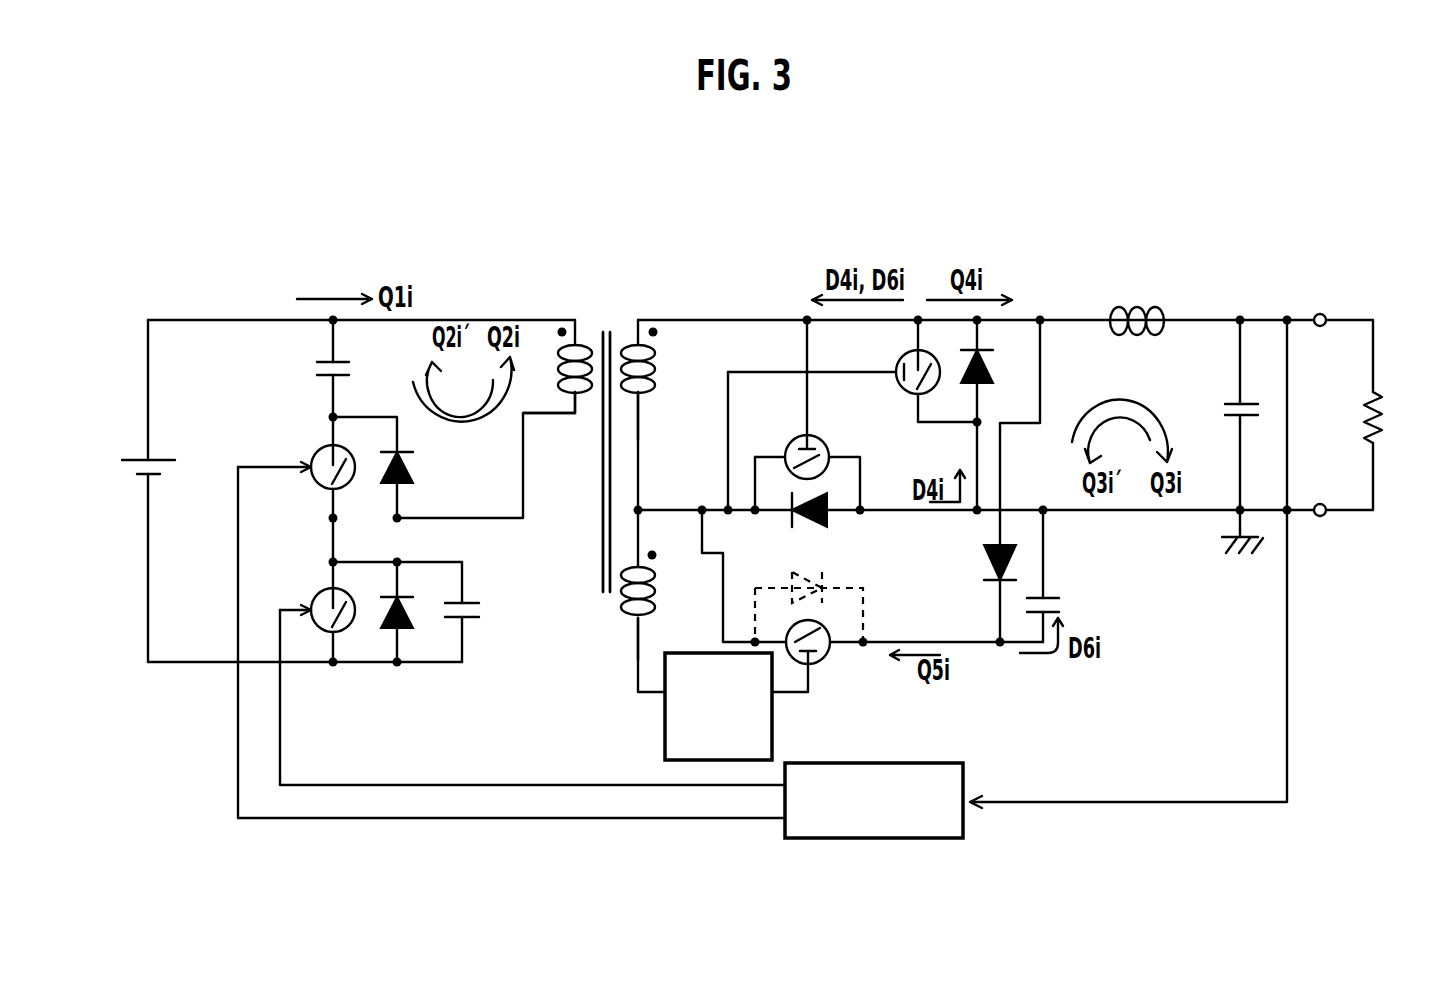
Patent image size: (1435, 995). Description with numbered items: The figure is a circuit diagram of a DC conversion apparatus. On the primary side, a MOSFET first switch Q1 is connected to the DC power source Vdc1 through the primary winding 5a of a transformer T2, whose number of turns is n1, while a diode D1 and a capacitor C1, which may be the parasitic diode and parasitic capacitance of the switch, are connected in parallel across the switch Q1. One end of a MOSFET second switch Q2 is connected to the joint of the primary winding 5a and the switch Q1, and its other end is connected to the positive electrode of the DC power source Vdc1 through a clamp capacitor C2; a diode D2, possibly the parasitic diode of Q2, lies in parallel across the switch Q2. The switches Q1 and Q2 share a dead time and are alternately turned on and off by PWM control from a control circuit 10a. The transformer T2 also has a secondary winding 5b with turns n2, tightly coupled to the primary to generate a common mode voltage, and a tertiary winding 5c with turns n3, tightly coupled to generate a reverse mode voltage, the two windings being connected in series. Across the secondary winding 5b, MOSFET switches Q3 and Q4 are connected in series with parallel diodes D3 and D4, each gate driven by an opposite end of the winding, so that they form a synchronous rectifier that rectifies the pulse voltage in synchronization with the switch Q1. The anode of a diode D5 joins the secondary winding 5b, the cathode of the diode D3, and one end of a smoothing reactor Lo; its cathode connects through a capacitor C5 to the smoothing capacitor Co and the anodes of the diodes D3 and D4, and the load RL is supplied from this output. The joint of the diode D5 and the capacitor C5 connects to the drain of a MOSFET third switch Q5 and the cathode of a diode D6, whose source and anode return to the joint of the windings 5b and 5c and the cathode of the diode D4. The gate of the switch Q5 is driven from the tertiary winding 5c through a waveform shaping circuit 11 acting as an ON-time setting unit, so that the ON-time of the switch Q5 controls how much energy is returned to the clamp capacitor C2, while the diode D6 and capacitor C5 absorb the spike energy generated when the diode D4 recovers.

The DC power source Vdc1 is at (118, 467).
The clamp capacitor C2 is at (350, 368).
The second switch Q2 is at (317, 459).
The diode D2 is at (414, 465).
The first switch Q1 is at (317, 602).
The diode D1 is at (406, 628).
The capacitor C1 is at (477, 610).
The transformer T2 is at (580, 429).
The number of turns of the primary winding n1 is at (562, 369).
The number of turns of the secondary winding n2 is at (654, 369).
The number of turns of the tertiary winding n3 is at (654, 591).
The primary winding 5a is at (565, 395).
The secondary winding 5b is at (655, 393).
The tertiary winding 5c is at (617, 600).
The waveform shaping circuit 11 is at (663, 710).
The control circuit 10a is at (880, 763).
The switch Q3 is at (910, 386).
The diode D3 is at (994, 367).
The switch Q4 is at (792, 449).
The diode D4 is at (809, 524).
The third switch Q5 is at (816, 656).
The diode D5 is at (983, 562).
The diode D6 is at (809, 596).
The capacitor C5 is at (1060, 602).
The smoothing reactor Lo is at (1137, 338).
The smoothing capacitor Co is at (1224, 410).
The load RL is at (1388, 417).